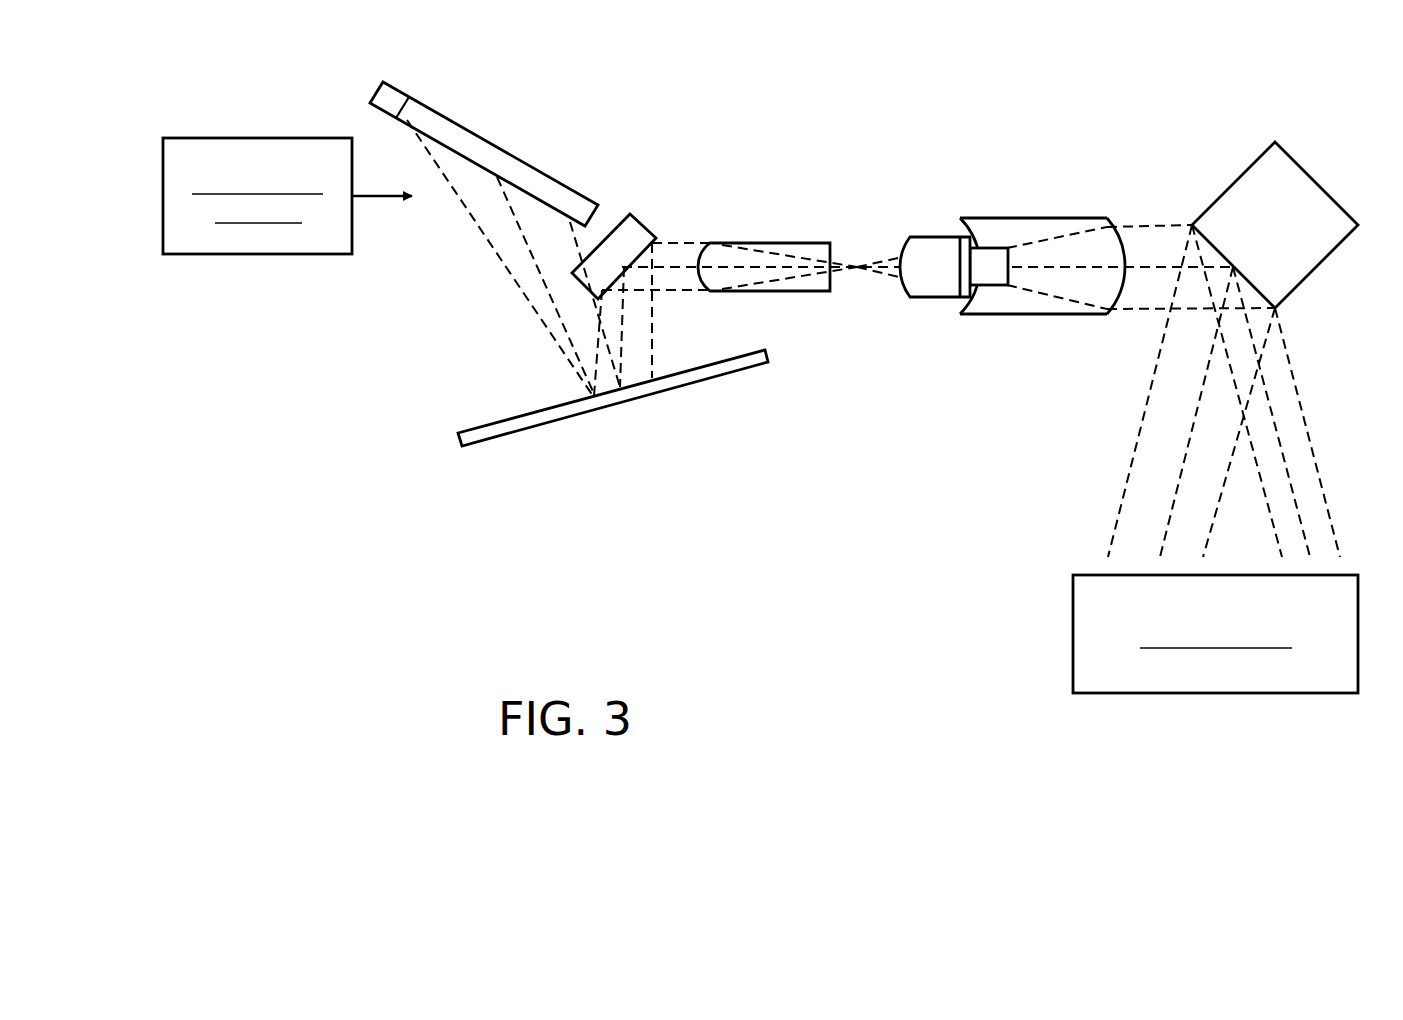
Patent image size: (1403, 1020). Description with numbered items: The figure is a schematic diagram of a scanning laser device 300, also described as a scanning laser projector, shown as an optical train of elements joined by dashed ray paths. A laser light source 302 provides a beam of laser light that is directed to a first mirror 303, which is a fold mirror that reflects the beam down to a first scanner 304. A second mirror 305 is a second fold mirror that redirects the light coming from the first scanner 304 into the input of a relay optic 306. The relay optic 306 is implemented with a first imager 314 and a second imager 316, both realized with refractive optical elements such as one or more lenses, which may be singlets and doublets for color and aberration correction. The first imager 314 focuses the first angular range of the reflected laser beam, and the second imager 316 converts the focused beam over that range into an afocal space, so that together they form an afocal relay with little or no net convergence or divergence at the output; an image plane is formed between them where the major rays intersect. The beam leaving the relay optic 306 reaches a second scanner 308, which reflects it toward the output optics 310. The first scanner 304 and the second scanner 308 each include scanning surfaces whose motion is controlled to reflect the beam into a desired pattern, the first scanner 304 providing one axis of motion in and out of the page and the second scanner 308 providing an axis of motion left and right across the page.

The scanning laser device 300 is at (592, 629).
The laser light source 302 is at (196, 254).
The first mirror 303 is at (500, 150).
The first scanner 304 is at (555, 422).
The second mirror 305 is at (645, 226).
The relay optic 306 is at (849, 184).
The second scanner 308 is at (1318, 268).
The output optics 310 is at (1213, 693).
The first imager 314 is at (777, 291).
The second imager 316 is at (990, 314).